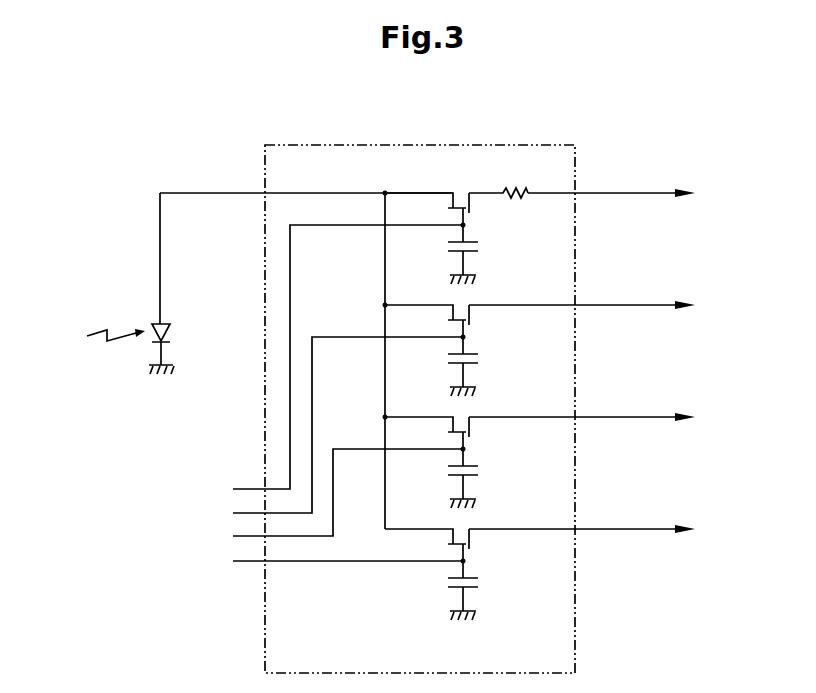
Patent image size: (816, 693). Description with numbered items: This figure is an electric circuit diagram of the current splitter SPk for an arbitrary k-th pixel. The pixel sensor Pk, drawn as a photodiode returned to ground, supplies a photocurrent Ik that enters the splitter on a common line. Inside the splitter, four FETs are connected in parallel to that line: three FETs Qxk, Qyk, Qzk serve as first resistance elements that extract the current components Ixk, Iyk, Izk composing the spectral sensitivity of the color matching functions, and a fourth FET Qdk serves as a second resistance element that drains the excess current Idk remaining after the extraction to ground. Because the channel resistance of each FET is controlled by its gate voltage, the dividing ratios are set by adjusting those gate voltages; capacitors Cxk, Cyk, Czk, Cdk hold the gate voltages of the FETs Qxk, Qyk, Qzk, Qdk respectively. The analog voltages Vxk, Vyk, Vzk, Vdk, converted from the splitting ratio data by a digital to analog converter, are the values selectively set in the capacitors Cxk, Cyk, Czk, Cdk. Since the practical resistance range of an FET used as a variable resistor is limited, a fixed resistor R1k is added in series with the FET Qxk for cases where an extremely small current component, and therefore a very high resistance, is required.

The current splitter SPk is at (310, 146).
The photocurrent Ik is at (228, 183).
The pixel sensor Pk is at (167, 331).
The fixed resistor R1k is at (501, 179).
The FET Qxk is at (472, 213).
The capacitor Cxk is at (471, 251).
The current component Ixk is at (630, 193).
The FET Qyk is at (472, 325).
The capacitor Cyk is at (471, 363).
The current component Iyk is at (601, 305).
The FET Qzk is at (472, 437).
The capacitor Czk is at (471, 475).
The current component Izk is at (600, 417).
The FET Qdk is at (472, 549).
The capacitor Cdk is at (471, 587).
The excess current Idk is at (601, 529).
The analog voltage Vxk is at (326, 362).
The analog voltage Vyk is at (326, 430).
The analog voltage Vzk is at (326, 498).
The analog voltage Vdk is at (326, 562).